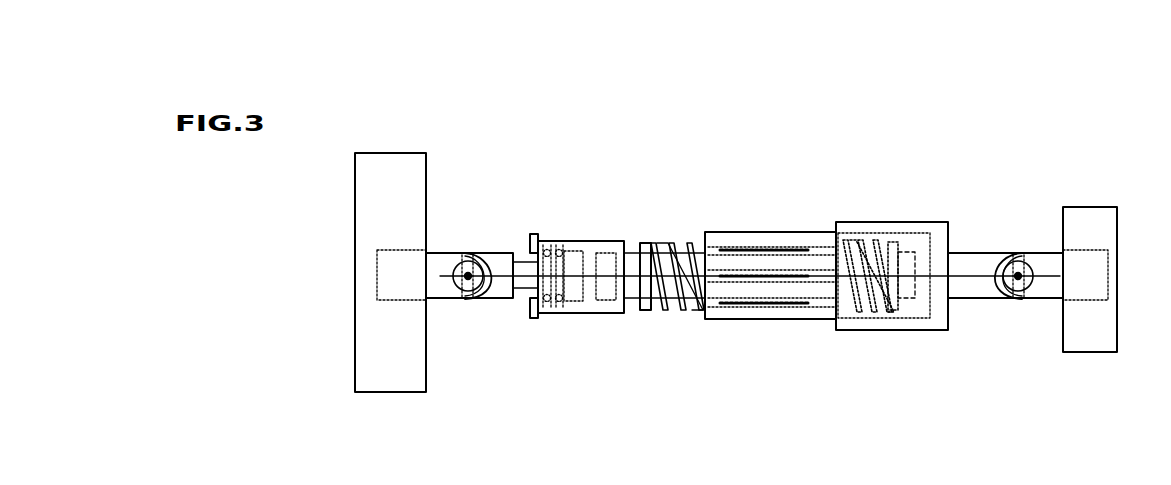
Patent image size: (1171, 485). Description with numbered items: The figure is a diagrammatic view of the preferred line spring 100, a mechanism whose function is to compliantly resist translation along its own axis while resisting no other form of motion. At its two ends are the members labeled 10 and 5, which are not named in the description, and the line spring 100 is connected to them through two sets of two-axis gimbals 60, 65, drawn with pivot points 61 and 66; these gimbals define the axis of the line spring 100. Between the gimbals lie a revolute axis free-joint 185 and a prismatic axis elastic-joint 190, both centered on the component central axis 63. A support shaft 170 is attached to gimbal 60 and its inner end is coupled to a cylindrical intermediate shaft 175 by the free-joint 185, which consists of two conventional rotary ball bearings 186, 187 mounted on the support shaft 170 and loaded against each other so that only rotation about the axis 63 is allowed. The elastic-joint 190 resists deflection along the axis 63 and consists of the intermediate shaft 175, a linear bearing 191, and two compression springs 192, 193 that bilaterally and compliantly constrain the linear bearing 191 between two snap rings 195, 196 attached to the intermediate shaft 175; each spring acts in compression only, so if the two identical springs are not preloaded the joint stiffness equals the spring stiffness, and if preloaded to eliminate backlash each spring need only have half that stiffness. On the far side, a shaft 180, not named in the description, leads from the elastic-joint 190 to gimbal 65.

The line spring 100 is at (803, 130).
The first member 10 is at (402, 194).
The second member 5 is at (1095, 240).
The 2-axis gimbal 60 is at (461, 307).
The pivot pin 61 is at (466, 268).
The support shaft 170 is at (497, 253).
The component central axis 63 is at (525, 278).
The revolute axis free-joint 185 is at (628, 350).
The rotary ball bearing 186 is at (547, 240).
The rotary ball bearing 187 is at (558, 240).
The snap ring 195 is at (645, 240).
The compression spring 192 is at (677, 235).
The linear bearing 191 is at (758, 232).
The compression spring 193 is at (858, 233).
The snap ring 196 is at (900, 240).
The cylindrical intermediate shaft 175 is at (921, 265).
The second shaft 180 is at (1000, 240).
The pivot pin 66 is at (1027, 263).
The 2-axis gimbal 65 is at (1013, 303).
The prismatic axis elastic-joint 190 is at (937, 350).